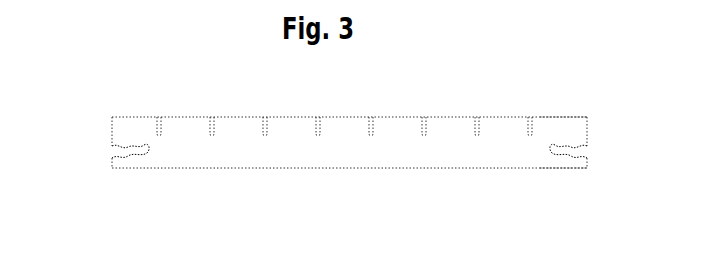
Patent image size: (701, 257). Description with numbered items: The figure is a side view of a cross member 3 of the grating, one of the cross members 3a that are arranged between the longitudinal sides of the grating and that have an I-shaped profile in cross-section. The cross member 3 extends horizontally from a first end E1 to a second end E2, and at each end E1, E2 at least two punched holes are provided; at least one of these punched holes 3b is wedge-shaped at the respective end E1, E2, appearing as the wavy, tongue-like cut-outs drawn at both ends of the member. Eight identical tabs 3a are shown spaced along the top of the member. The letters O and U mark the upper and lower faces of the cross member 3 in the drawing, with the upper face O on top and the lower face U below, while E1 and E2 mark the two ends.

The cross member 3 is at (302, 192).
The cross member 3a is at (159, 116).
The punched hole 3b is at (111, 148).
The first end E1 is at (99, 120).
The second end E2 is at (592, 129).
The upper side O is at (568, 99).
The lower side U is at (568, 176).